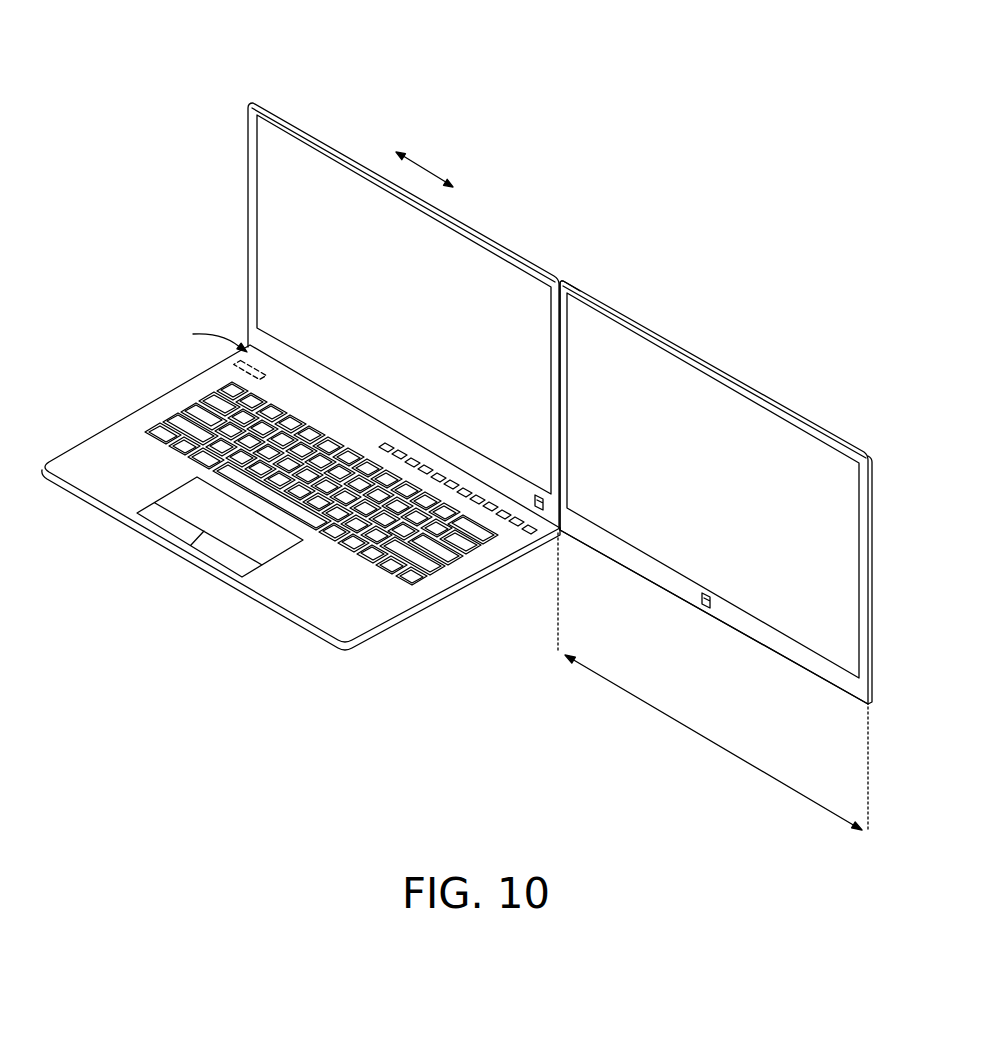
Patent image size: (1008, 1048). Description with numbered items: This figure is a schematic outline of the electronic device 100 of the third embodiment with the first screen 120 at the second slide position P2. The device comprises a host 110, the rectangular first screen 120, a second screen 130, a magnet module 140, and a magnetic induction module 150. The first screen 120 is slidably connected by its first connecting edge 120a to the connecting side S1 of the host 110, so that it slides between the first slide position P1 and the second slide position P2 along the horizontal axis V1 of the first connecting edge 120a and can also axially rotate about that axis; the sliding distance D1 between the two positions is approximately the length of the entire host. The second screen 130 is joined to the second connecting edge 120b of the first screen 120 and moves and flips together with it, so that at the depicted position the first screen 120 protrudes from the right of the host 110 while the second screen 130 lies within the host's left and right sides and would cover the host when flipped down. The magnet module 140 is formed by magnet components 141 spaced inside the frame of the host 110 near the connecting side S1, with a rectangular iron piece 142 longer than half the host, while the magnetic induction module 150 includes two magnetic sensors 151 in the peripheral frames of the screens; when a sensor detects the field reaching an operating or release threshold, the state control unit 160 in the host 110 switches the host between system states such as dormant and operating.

The electronic device 100 is at (270, 78).
The host 110 is at (277, 593).
The first screen 120 is at (811, 433).
The first connecting edge 120a is at (760, 656).
The second connecting edge 120b is at (547, 290).
The second screen 130 is at (338, 158).
The magnet module 140 is at (343, 522).
The magnet component 141 is at (498, 512).
The rectangular iron piece 142 is at (512, 535).
The magnetic induction module 150 is at (736, 319).
The magnetic sensor 151 is at (545, 503).
The state control unit 160 is at (233, 365).
The connecting side S1 is at (207, 338).
The horizontal axis V1 is at (424, 166).
The sliding distance D1 is at (713, 742).
The first slide position P1 is at (552, 607).
The second slide position P2 is at (867, 785).